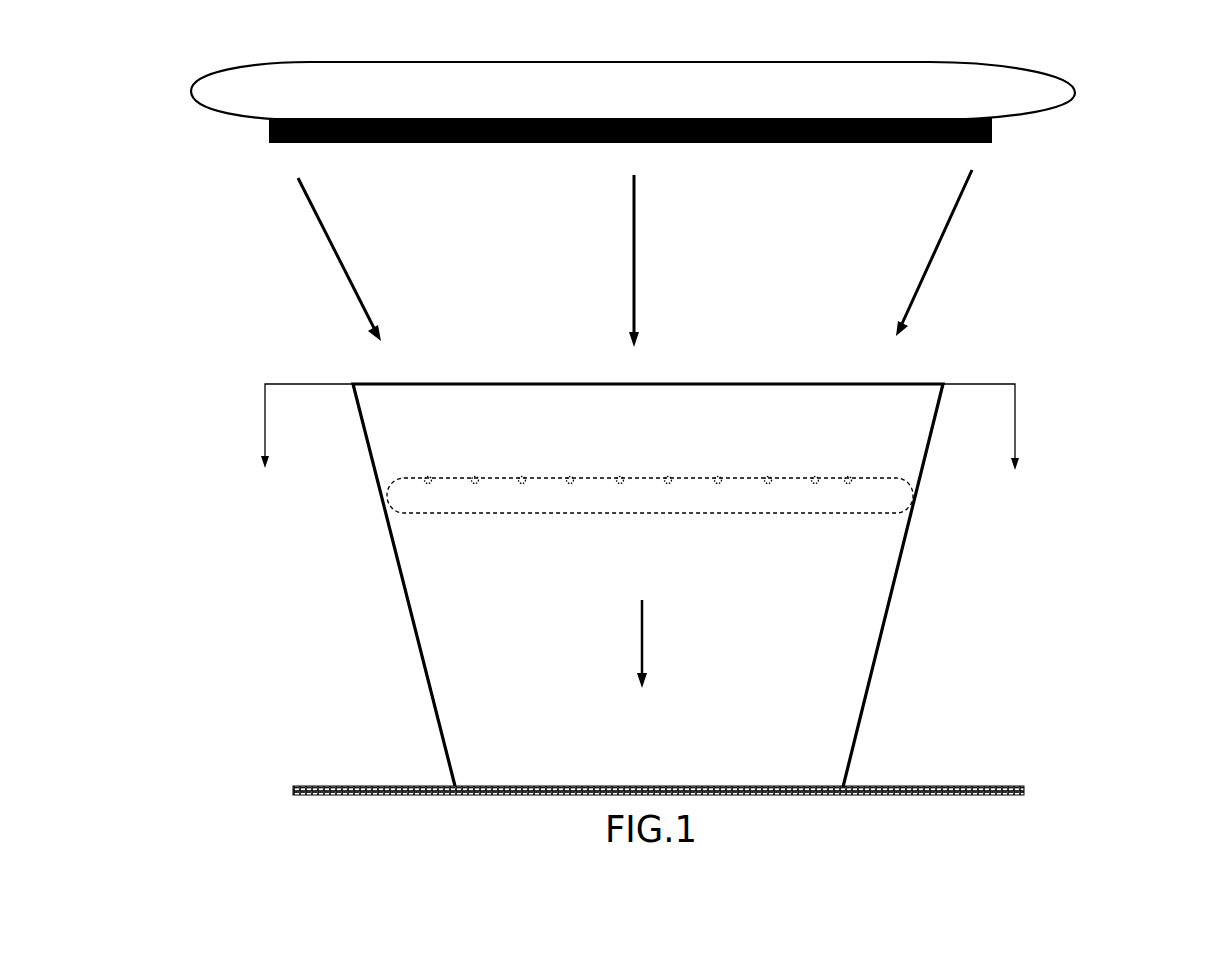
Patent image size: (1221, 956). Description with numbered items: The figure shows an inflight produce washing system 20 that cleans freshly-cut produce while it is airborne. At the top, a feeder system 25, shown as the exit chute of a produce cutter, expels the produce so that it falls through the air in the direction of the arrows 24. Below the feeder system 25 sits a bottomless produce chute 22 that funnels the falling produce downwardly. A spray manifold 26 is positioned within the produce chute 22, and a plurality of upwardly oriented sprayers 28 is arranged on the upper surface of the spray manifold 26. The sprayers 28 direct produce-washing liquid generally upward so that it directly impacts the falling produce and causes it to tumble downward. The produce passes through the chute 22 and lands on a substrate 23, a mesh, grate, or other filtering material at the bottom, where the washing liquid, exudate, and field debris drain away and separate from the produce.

The inflight produce washing system 20 is at (196, 433).
The produce chute 22 is at (883, 628).
The substrate 23 is at (935, 786).
The arrows 24 is at (635, 429).
The feeder system 25 is at (1048, 135).
The spray manifold 26 is at (488, 513).
The sprayers 28 is at (428, 478).